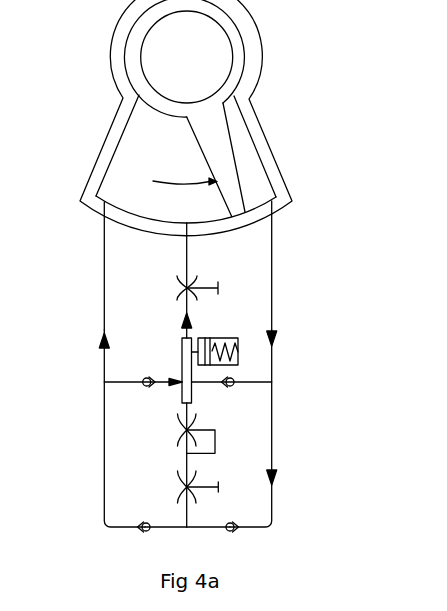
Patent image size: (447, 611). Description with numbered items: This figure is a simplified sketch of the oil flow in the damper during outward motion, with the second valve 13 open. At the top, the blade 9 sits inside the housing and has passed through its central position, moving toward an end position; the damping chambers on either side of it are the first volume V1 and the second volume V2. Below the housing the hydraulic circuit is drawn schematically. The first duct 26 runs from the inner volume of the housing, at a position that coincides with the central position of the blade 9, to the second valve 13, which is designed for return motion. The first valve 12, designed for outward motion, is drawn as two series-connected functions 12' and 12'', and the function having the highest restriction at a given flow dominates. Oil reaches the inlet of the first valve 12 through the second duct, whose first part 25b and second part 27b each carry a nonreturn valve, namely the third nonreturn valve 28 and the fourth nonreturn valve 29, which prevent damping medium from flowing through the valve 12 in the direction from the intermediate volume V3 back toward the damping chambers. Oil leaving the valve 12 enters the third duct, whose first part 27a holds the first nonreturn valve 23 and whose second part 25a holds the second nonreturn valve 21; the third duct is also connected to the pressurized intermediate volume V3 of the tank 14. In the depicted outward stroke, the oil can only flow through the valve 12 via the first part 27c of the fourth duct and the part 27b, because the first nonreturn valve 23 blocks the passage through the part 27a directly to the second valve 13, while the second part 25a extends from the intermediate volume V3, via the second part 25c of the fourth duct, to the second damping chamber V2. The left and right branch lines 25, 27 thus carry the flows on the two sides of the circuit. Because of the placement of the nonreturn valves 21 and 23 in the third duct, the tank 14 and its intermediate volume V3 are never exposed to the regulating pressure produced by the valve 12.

The blade 9 is at (213, 130).
The first volume V1 is at (245, 153).
The second volume V2 is at (133, 145).
The intermediate volume V3 is at (182, 350).
The first valve 12 is at (167, 465).
The first function of the first valve 12' is at (217, 433).
The second function of the first valve 12'' is at (219, 487).
The second valve 13 is at (181, 288).
The tank 14 is at (228, 337).
The second nonreturn valve 21 is at (147, 386).
The first nonreturn valve 23 is at (237, 381).
The first line 25 is at (75, 326).
The second part of the third duct 25a is at (172, 387).
The first part of the second duct 25b is at (173, 528).
The second part of the fourth duct 25c is at (104, 288).
The first duct 26 is at (182, 258).
The second line 27 is at (292, 335).
The first part of the third duct 27a is at (194, 385).
The second part of the second duct 27b is at (198, 528).
The first part of the fourth duct 27c is at (273, 257).
The third nonreturn valve 28 is at (140, 525).
The fourth nonreturn valve 29 is at (241, 525).